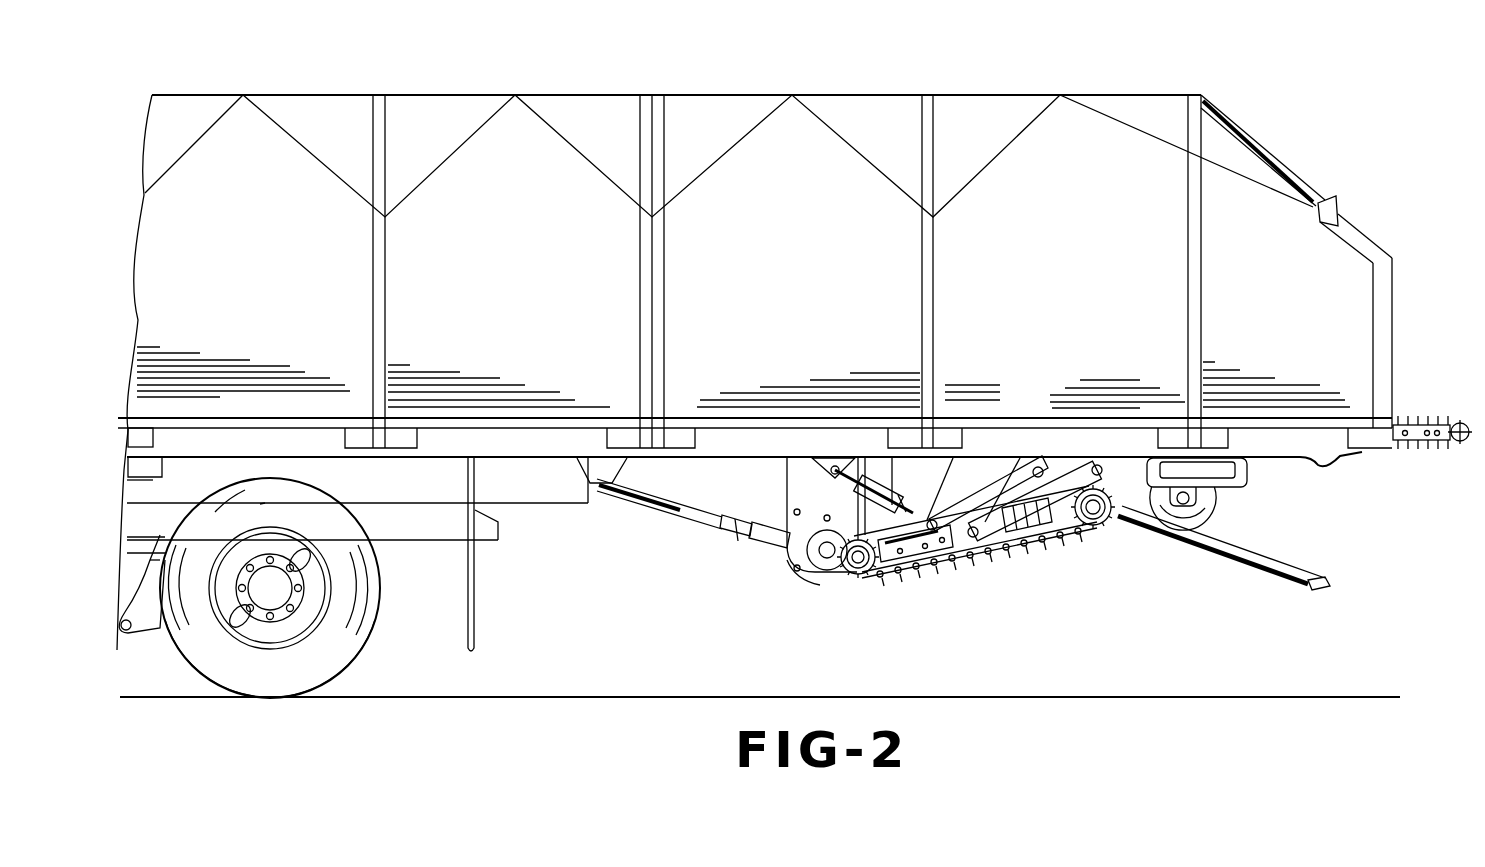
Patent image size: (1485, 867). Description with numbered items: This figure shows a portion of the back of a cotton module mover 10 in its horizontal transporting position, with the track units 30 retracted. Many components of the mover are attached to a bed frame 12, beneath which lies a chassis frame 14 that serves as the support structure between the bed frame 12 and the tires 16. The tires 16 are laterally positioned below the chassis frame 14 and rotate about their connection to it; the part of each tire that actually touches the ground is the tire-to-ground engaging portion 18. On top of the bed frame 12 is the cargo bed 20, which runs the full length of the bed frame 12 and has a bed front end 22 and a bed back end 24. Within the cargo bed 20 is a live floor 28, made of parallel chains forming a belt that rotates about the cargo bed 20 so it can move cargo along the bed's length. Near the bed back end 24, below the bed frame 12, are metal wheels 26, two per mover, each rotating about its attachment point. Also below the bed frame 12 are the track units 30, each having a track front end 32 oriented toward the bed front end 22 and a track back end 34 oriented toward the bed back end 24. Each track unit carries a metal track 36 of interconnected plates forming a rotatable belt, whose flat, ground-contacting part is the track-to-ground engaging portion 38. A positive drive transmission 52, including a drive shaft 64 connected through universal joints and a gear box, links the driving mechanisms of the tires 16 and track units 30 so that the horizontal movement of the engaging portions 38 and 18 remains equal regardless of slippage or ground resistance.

The cotton module mover 10 is at (890, 77).
The bed frame 12 is at (578, 440).
The chassis frame 14 is at (437, 525).
The tires 16 is at (380, 573).
The tire-to-ground engaging portion 18 is at (270, 699).
The cargo bed 20 is at (768, 304).
The bed front end 22 is at (170, 284).
The bed back end 24 is at (1350, 353).
The metal wheels 26 is at (1218, 504).
The live floor 28 is at (1100, 417).
The track units 30 is at (1036, 580).
The track front end 32 is at (855, 604).
The track back end 34 is at (1108, 556).
The metal track 36 is at (840, 580).
The track-to-ground engaging portion 38 is at (925, 566).
The positive drive transmission 52 is at (768, 608).
The drive shaft 64 is at (706, 531).